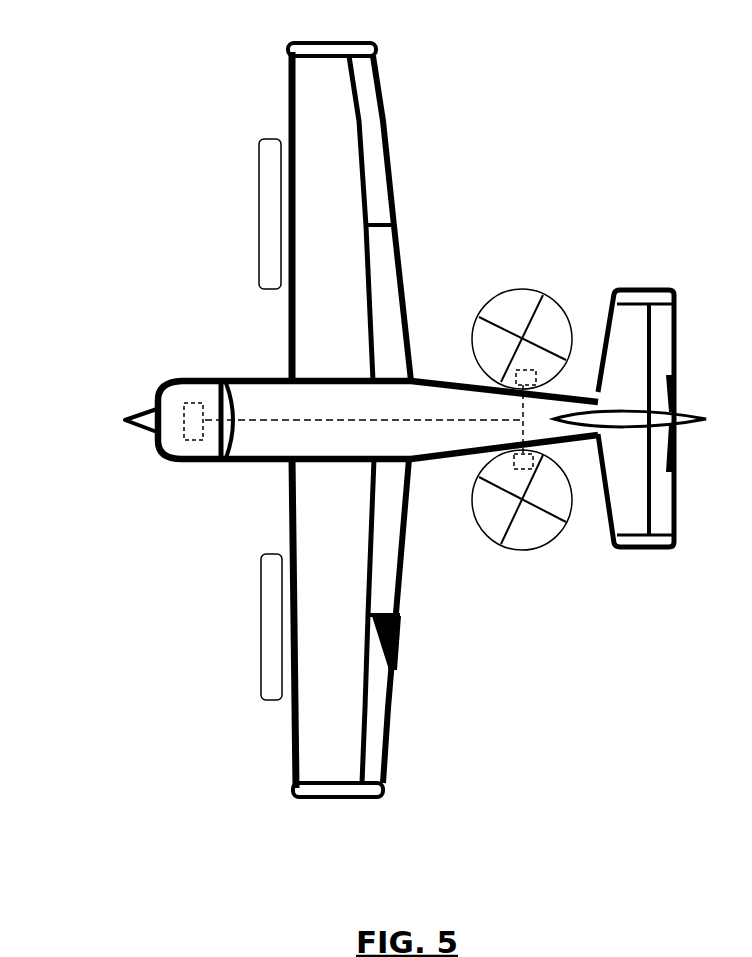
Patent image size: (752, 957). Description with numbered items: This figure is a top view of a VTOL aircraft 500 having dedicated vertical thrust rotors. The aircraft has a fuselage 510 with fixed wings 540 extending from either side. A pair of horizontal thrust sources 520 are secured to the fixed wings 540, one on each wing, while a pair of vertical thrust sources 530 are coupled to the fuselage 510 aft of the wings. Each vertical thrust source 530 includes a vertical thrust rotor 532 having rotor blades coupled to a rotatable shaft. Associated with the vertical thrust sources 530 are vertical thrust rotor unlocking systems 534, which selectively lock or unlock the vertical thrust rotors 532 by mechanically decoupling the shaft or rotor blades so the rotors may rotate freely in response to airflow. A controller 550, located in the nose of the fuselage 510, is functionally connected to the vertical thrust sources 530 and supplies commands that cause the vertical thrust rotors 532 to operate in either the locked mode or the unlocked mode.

The VTOL aircraft 500 is at (89, 90).
The fuselage 510 is at (212, 456).
The horizontal thrust sources 520 is at (251, 142).
The vertical thrust sources 530 is at (510, 281).
The vertical thrust rotor 532 is at (536, 344).
The vertical thrust rotor unlocking systems 534 is at (519, 361).
The fixed wings 540 is at (386, 167).
The controller 550 is at (186, 395).